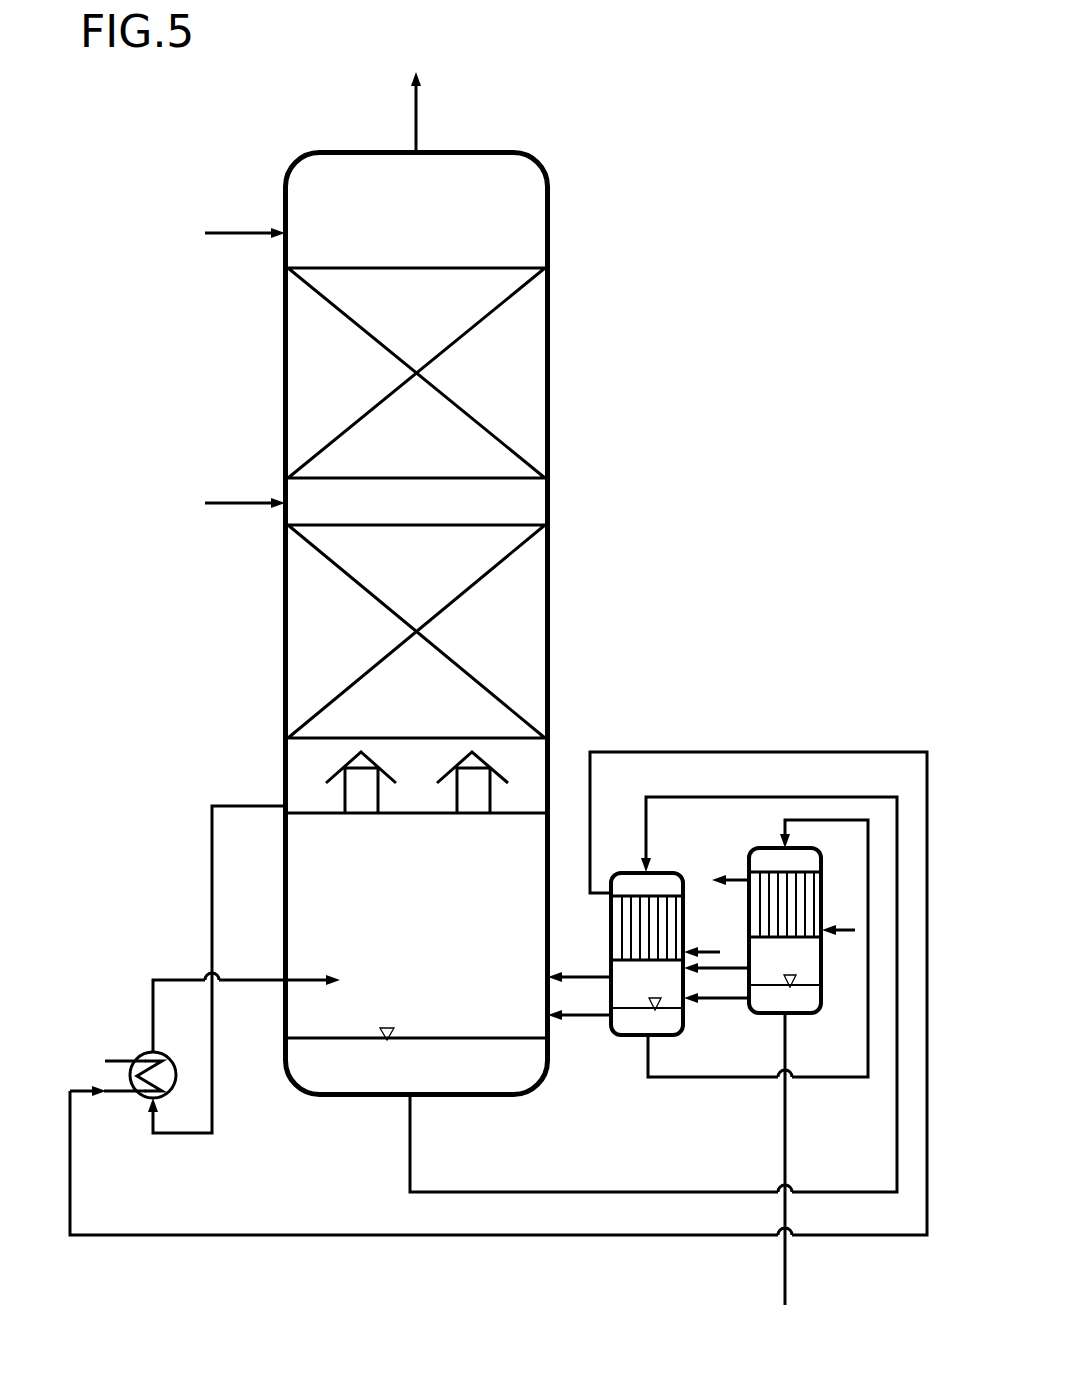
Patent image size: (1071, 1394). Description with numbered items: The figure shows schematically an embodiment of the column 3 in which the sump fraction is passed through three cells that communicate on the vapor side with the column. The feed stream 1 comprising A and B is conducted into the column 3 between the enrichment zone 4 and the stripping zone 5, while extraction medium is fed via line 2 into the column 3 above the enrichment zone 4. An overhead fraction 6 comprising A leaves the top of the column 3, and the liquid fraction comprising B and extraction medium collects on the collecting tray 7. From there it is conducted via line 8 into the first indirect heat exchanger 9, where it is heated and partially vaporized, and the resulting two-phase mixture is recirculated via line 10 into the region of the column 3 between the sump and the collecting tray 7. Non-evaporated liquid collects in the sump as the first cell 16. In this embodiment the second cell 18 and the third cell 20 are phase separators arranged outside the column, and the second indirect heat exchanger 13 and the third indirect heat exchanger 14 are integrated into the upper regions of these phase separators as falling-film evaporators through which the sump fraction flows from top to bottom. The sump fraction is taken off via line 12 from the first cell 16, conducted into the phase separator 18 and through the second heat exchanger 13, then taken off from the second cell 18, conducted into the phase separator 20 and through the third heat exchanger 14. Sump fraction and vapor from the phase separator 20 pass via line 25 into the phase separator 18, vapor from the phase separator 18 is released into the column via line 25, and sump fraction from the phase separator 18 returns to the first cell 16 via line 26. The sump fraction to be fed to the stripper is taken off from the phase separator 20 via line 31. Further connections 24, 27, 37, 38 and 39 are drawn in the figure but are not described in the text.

The feed stream 1 is at (246, 502).
The extraction medium line 2 is at (246, 232).
The column 3 is at (550, 232).
The enrichment zone 4 is at (518, 452).
The stripping zone 5 is at (518, 712).
The overhead fraction 6 is at (418, 120).
The collecting tray 7 is at (528, 806).
The line 8 is at (246, 805).
The first indirect heat exchanger 9 is at (144, 1054).
The line 10 is at (192, 979).
The line 12 is at (408, 1156).
The second indirect heat exchanger 13 is at (628, 922).
The third indirect heat exchanger 14 is at (808, 898).
The first cell 16 is at (312, 1080).
The second cell 18 is at (626, 994).
The third cell 20 is at (810, 972).
The liquid transfer line 24 is at (722, 1000).
The line 25 is at (564, 986).
The line 26 is at (572, 1020).
The gas transfer line 27 is at (738, 972).
The line 31 is at (786, 1258).
The feed line 37 is at (702, 952).
The supply line 38 is at (84, 1093).
The discharge line 39 is at (110, 1058).